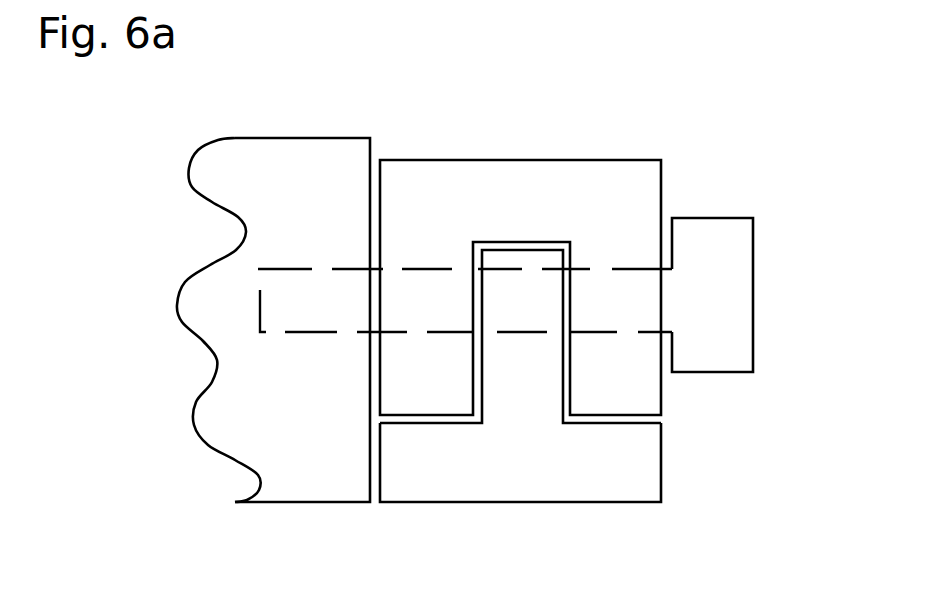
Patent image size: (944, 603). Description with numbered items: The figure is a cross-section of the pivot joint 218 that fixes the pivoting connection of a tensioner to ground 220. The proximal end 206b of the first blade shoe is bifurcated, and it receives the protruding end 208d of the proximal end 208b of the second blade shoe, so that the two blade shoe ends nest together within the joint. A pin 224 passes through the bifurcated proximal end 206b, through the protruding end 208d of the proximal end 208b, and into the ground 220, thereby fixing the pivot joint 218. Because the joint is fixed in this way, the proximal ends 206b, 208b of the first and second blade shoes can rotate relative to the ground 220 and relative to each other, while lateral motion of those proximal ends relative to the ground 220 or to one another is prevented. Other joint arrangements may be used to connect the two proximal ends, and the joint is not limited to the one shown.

The pivot joint 218 is at (360, 209).
The ground 220 is at (283, 178).
The proximal end of the first blade shoe 206b is at (618, 185).
The protruding end 208d is at (518, 370).
The proximal end of the second blade shoe 208b is at (617, 467).
The pin 224 is at (715, 277).